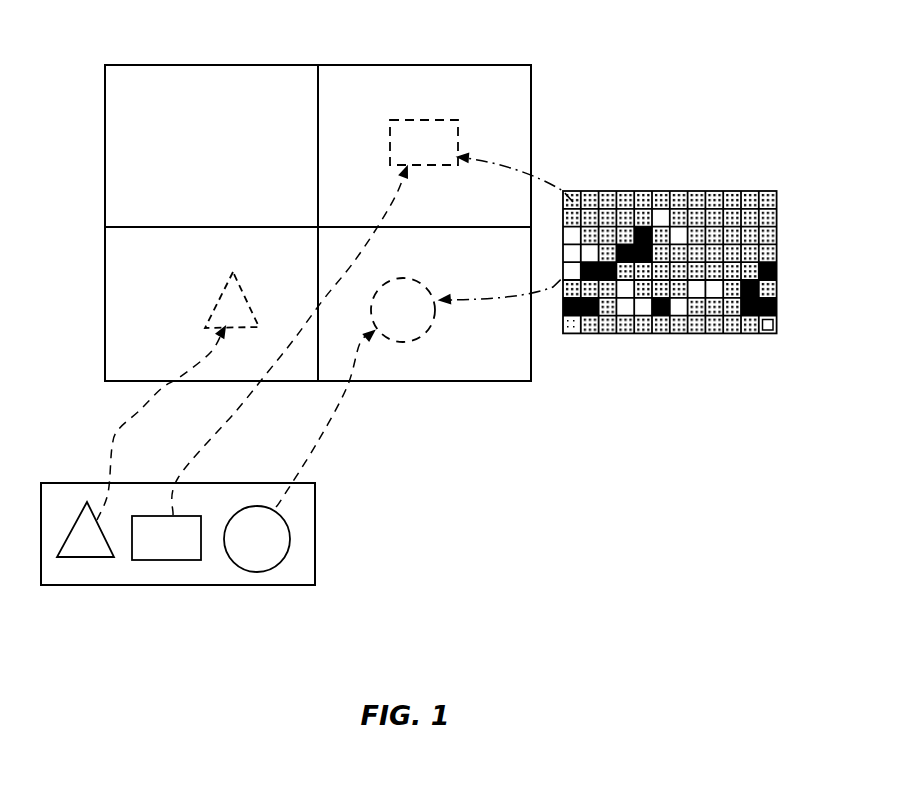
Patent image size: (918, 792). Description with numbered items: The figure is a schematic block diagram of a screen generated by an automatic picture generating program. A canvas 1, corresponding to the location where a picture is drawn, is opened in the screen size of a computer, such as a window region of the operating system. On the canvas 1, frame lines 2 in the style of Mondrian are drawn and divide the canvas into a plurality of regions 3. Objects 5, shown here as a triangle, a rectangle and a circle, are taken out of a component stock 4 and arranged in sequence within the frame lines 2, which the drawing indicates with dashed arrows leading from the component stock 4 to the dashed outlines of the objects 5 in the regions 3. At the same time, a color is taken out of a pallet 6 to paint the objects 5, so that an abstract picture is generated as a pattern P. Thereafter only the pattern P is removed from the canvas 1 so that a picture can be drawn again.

The canvas 1 is at (236, 104).
The pattern P is at (395, 103).
The frame lines 2 is at (297, 226).
The regions 3 is at (366, 202).
The component stock 4 is at (83, 482).
The objects 5 is at (459, 137).
The pallet 6 is at (731, 190).